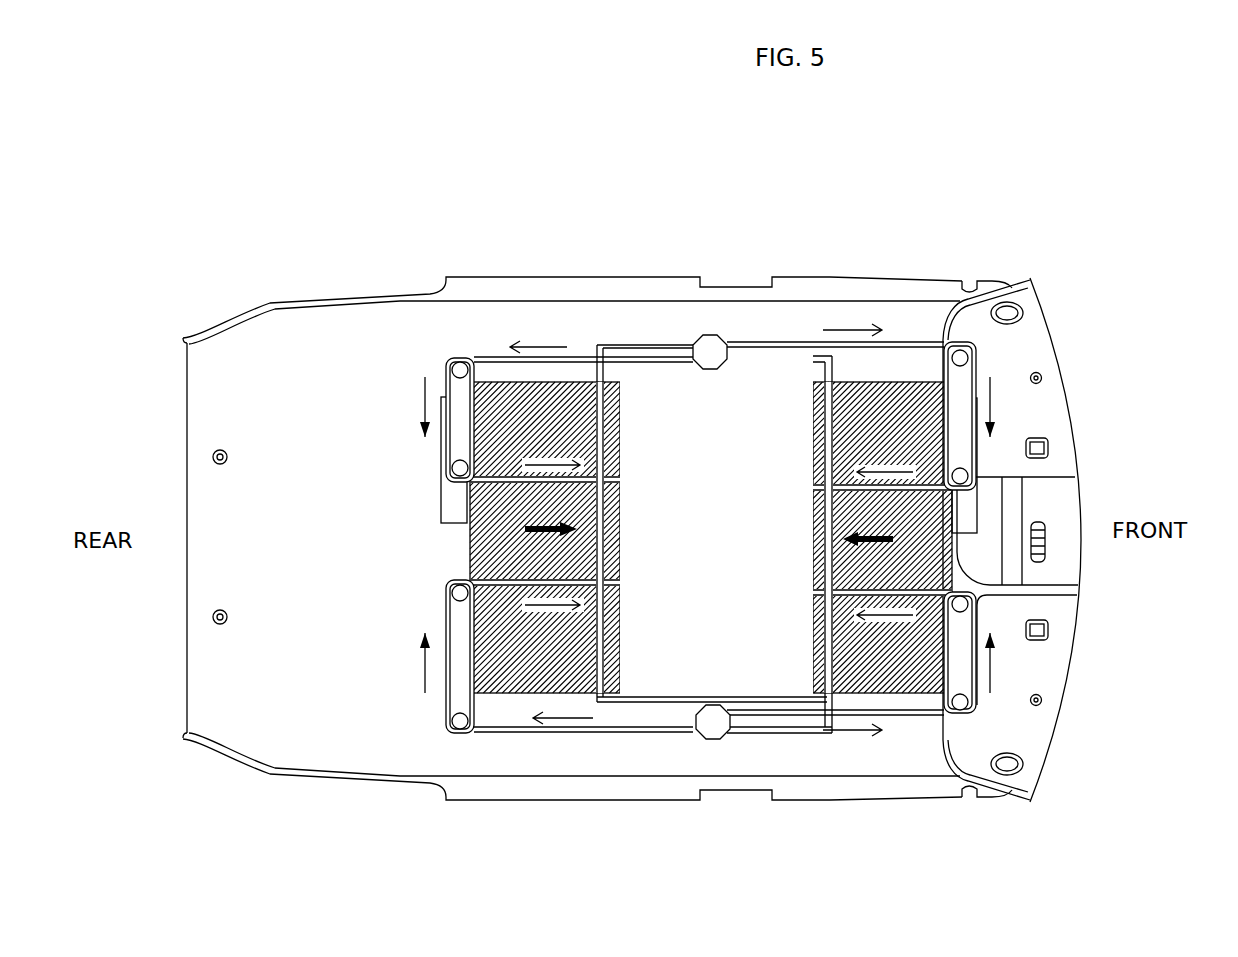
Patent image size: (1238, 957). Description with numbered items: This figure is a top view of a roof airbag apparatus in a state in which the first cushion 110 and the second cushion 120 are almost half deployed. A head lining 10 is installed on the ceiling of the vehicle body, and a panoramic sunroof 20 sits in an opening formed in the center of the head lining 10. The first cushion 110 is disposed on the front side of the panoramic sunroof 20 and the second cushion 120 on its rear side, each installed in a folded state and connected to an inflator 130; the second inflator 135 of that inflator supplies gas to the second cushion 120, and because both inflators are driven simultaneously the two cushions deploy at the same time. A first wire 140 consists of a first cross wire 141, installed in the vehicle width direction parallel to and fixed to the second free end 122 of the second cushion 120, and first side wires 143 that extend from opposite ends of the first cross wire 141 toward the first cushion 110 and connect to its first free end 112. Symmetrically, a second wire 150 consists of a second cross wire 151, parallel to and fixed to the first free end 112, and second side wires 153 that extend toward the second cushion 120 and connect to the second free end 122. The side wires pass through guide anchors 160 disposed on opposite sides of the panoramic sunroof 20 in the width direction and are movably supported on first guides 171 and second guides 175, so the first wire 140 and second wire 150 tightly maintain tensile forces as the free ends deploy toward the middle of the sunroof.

The head lining 10 is at (297, 342).
The panoramic sunroof 20 is at (762, 398).
The first cushion 110 is at (1143, 348).
The first free end 112 is at (810, 660).
The second cushion 120 is at (457, 690).
The second free end 122 is at (620, 663).
The inflator 130 is at (967, 508).
The second inflator 135 is at (447, 502).
The first wire 140 is at (766, 446).
The first cross wire 141 is at (597, 343).
The first side wires 143 is at (646, 343).
The second wire 150 is at (848, 446).
The second cross wire 151 is at (793, 356).
The second side wires 153 is at (833, 371).
The guide anchors 160 is at (713, 350).
The first guides 171 is at (963, 478).
The second guides 175 is at (447, 460).